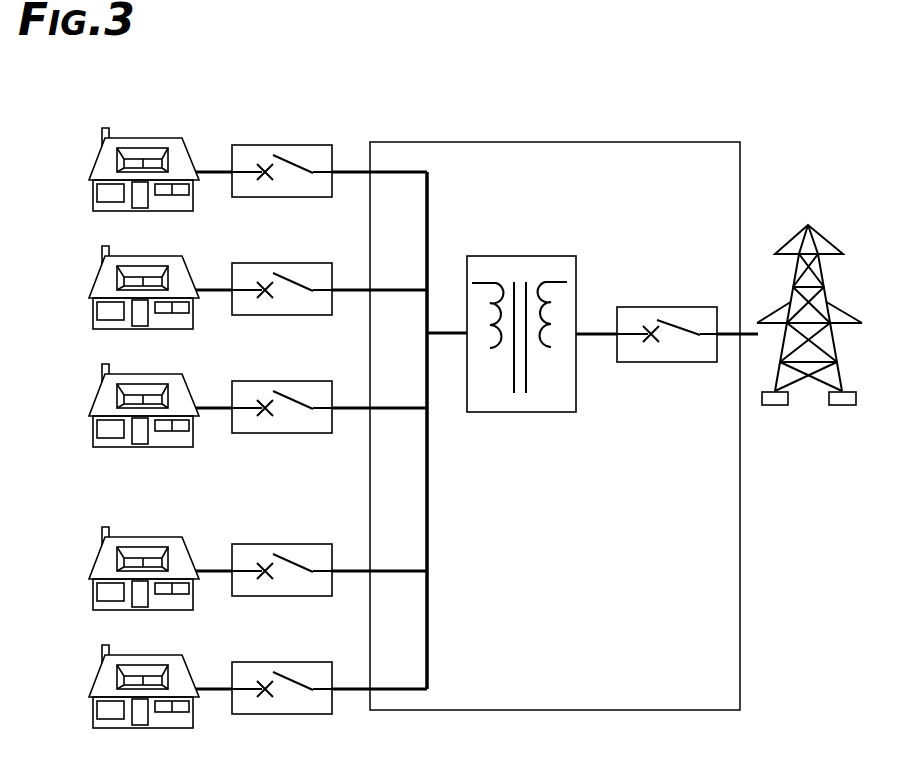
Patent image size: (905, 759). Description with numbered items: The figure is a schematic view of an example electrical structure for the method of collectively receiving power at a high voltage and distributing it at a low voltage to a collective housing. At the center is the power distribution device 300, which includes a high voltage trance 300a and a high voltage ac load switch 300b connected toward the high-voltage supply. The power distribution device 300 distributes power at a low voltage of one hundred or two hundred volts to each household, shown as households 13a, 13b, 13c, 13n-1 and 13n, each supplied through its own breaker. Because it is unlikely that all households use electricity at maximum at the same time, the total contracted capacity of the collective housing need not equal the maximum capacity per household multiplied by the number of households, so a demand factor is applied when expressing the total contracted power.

The household 13a is at (105, 158).
The household 13b is at (105, 276).
The household 13c is at (105, 394).
The household 13n-1 is at (105, 557).
The household 13n is at (105, 675).
The power distribution device 300 is at (553, 142).
The high voltage trance 300a is at (533, 262).
The high voltage ac load switch 300b is at (672, 313).